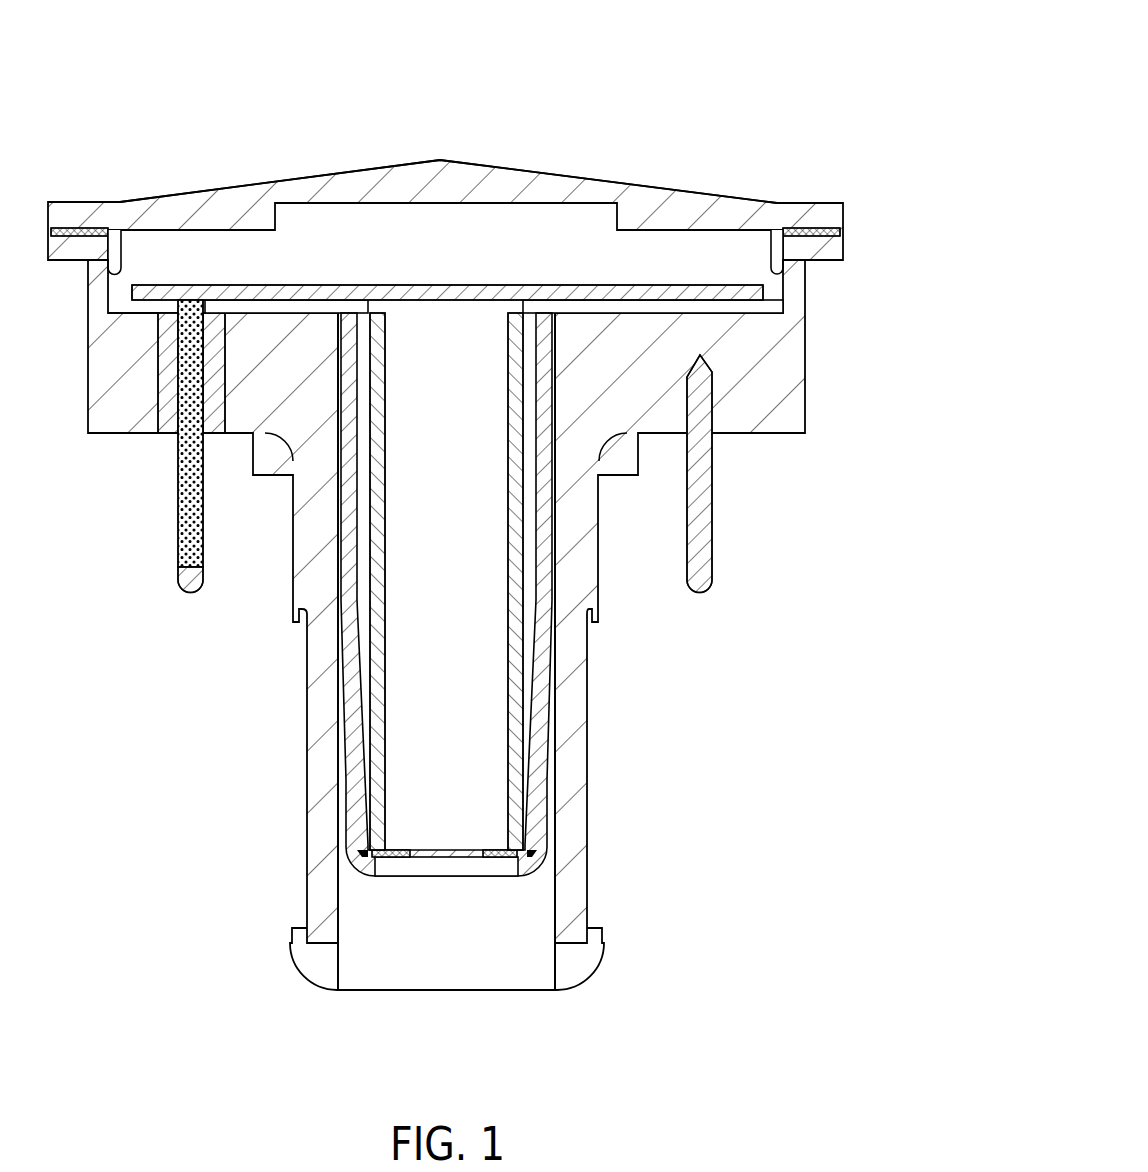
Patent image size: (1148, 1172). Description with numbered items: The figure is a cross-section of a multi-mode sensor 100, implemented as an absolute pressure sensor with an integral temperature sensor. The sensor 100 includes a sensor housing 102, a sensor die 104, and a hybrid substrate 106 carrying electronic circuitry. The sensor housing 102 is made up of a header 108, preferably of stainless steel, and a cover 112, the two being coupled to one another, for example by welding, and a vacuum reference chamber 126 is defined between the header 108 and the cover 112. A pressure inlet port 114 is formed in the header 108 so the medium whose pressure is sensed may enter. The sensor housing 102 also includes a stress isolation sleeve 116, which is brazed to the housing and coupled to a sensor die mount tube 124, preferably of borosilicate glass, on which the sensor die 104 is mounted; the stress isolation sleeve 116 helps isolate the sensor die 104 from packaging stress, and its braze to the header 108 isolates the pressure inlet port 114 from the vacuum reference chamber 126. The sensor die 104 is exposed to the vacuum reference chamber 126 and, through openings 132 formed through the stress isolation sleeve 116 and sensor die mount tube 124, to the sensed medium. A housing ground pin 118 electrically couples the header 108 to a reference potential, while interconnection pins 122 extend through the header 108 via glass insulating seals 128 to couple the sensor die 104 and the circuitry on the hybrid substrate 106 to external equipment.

The multi-mode sensor 100 is at (502, 520).
The sensor housing 102 is at (860, 226).
The sensor die 104 is at (437, 316).
The hybrid substrate 106 is at (578, 284).
The header 108 is at (580, 760).
The cover 112 is at (677, 192).
The pressure inlet port 114 is at (488, 968).
The stress isolation sleeve 116 is at (547, 667).
The housing ground pin 118 is at (713, 543).
The interconnection pins 122 is at (178, 529).
The sensor die mount tube 124 is at (388, 613).
The vacuum reference chamber 126 is at (231, 273).
The insulating seals 128 is at (168, 436).
The openings 132 is at (443, 838).